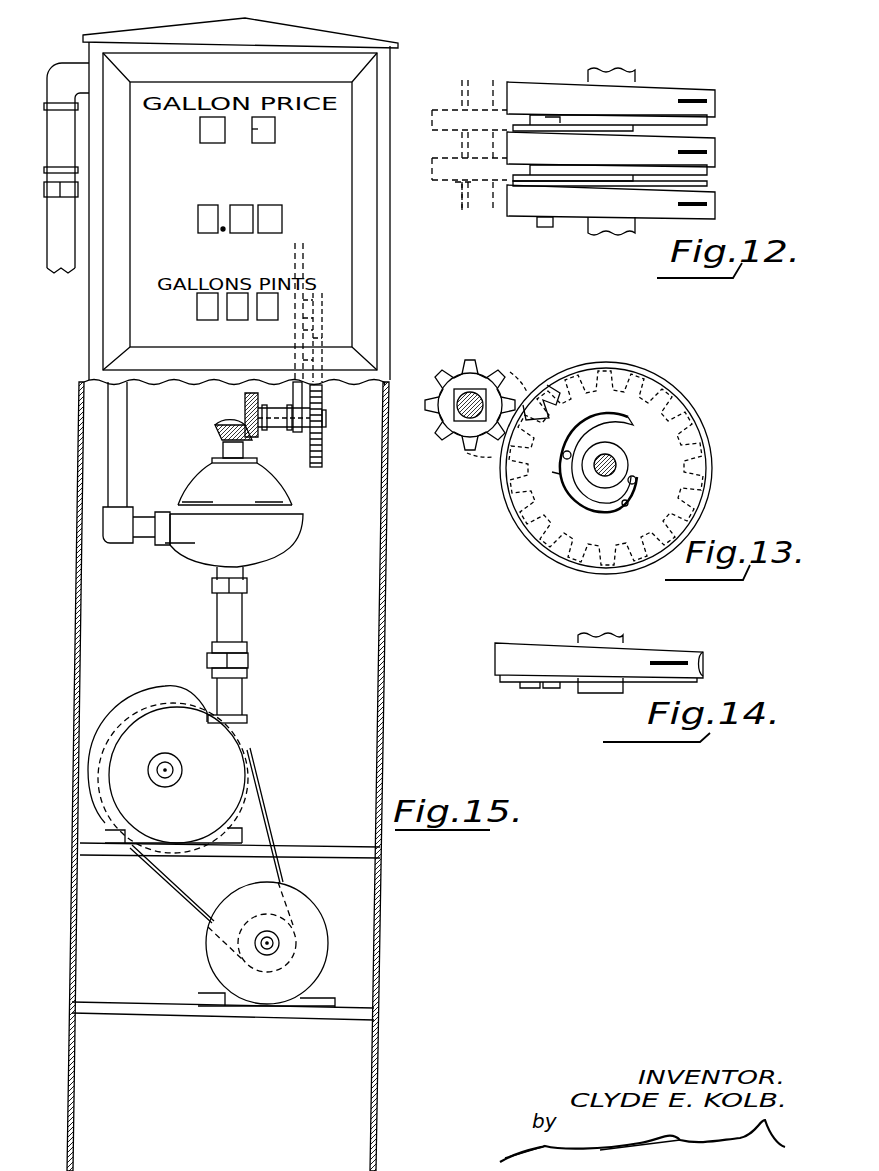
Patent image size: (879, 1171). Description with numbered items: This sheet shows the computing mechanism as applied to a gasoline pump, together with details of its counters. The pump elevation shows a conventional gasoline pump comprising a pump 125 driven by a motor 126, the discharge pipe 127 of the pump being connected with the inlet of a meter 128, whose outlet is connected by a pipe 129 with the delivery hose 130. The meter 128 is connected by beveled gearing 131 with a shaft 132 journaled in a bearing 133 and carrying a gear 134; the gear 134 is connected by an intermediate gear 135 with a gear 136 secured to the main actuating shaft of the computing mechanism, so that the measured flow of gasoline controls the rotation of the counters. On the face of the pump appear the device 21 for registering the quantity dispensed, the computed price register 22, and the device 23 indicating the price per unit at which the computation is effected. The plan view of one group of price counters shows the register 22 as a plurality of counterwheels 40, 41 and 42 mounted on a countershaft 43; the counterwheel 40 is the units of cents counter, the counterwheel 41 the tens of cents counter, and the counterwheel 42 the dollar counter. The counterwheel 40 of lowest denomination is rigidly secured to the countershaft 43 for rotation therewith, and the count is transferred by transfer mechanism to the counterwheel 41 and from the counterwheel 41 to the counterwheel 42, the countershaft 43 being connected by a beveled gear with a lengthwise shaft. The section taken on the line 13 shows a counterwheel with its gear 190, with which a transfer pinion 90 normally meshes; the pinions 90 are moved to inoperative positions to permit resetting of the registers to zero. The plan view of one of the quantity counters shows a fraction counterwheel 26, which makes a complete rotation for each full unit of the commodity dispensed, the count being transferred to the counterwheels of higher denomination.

In FIG. 12, the section line 13 is at (738, 130).
In FIG. 15, the quantity registering device 21 is at (182, 313).
In FIG. 15, the computed price register 22 is at (290, 213).
In FIG. 12, the computed price register 22 is at (632, 172).
In FIG. 15, the price per unit indicator 23 is at (287, 134).
In FIG. 14, the fraction counterwheel 26 is at (667, 650).
In FIG. 12, the units of cents counterwheel 40 is at (624, 202).
In FIG. 12, the tens of cents counterwheel 41 is at (716, 156).
In FIG. 12, the dollar counterwheel 42 is at (716, 102).
In FIG. 13, the dollar counterwheel 42 is at (680, 393).
In FIG. 13, the countershaft 43 is at (612, 463).
In FIG. 12, the transfer pinion 90 is at (445, 184).
In FIG. 13, the transfer pinion 90 is at (470, 362).
In FIG. 15, the pump 125 is at (213, 748).
In FIG. 15, the motor 126 is at (305, 927).
In FIG. 15, the discharge pipe 127 is at (237, 613).
In FIG. 15, the meter 128 is at (303, 537).
In FIG. 15, the pipe 129 is at (118, 460).
In FIG. 15, the delivery hose 130 is at (66, 186).
In FIG. 15, the beveled gearing 131 is at (245, 413).
In FIG. 15, the shaft 132 is at (275, 428).
In FIG. 15, the bearing 133 is at (298, 434).
In FIG. 15, the gear 134 is at (323, 450).
In FIG. 15, the intermediate gear 135 is at (307, 349).
In FIG. 15, the gear 136 is at (313, 293).
In FIG. 12, the counterwheel gear 190 is at (688, 181).
In FIG. 13, the counterwheel gear 190 is at (694, 426).